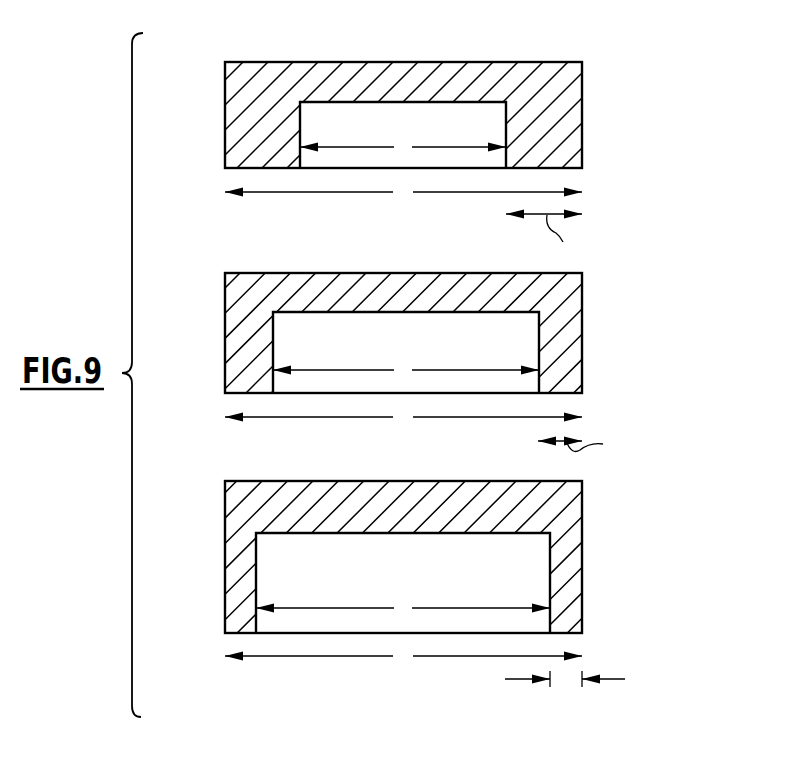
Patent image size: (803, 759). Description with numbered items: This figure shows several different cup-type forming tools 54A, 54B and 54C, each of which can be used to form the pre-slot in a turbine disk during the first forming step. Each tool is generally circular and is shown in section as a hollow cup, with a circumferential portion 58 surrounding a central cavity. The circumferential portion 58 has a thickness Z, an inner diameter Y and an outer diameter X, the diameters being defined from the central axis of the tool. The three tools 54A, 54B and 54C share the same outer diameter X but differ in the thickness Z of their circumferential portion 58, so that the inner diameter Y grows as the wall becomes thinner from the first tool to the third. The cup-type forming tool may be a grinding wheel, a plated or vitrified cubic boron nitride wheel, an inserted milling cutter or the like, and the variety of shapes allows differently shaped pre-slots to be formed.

The cup-type forming tool 54A is at (608, 79).
The cup-type forming tool 54B is at (608, 290).
The cup-type forming tool 54C is at (608, 498).
The circumferential portion 58 is at (242, 145).